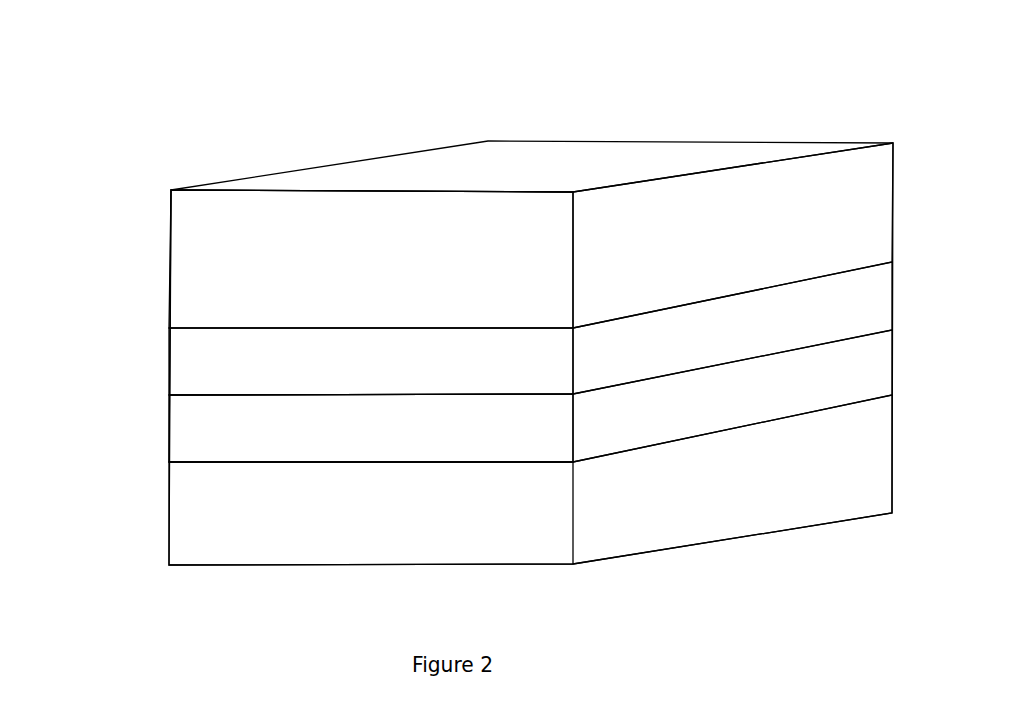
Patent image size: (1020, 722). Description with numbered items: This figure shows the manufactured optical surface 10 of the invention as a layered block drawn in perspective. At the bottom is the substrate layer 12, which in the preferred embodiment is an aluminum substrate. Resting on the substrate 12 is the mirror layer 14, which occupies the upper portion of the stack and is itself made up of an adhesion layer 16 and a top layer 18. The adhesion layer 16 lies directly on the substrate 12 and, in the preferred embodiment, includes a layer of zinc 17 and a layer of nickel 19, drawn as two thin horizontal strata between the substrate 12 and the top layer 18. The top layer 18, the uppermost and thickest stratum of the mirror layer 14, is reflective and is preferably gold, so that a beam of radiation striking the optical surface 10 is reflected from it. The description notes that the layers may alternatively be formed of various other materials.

The optical surface 10 is at (273, 97).
The substrate layer 12 is at (530, 480).
The mirror layer 14 is at (110, 197).
The adhesion layer 16 is at (160, 395).
The layer of zinc 17 is at (530, 396).
The top layer 18 is at (531, 235).
The layer of nickel 19 is at (530, 328).